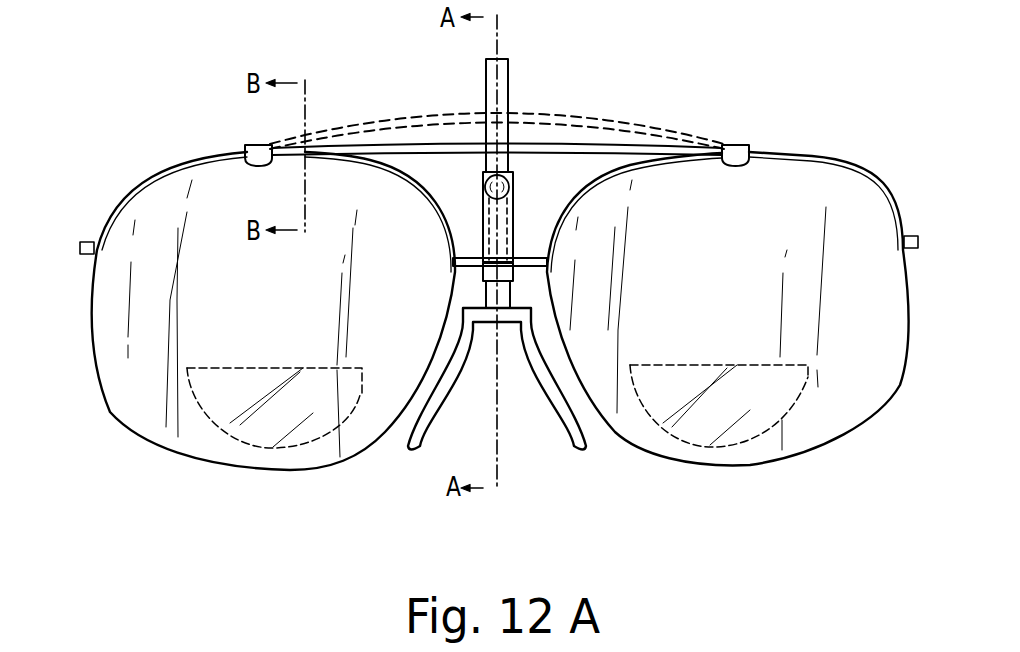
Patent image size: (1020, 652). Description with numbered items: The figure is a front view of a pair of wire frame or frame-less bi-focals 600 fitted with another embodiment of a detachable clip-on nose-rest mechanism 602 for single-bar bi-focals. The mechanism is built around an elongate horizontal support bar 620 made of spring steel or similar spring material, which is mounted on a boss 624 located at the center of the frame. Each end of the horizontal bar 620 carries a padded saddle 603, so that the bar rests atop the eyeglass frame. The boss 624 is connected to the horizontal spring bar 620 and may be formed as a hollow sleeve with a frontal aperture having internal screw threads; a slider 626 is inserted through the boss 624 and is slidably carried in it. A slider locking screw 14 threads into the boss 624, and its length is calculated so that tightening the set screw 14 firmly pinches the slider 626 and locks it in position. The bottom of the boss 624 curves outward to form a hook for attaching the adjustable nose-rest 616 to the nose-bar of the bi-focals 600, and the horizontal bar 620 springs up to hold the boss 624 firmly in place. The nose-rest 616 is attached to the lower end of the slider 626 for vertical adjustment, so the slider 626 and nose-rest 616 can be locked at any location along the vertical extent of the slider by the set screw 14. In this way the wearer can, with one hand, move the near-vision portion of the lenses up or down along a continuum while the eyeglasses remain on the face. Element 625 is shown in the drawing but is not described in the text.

The wire frame or frame-less bi-focals 600 is at (112, 415).
The adjustable nose-rest mechanism 602 is at (850, 155).
The padded saddle 603 is at (243, 148).
The horizontal support bar 620 is at (380, 150).
The slider 626 is at (586, 98).
The slider locking screw 14 is at (510, 186).
The boss 624 is at (480, 233).
The pivot 625 is at (514, 182).
The adjustable nose-rest 616 is at (509, 268).